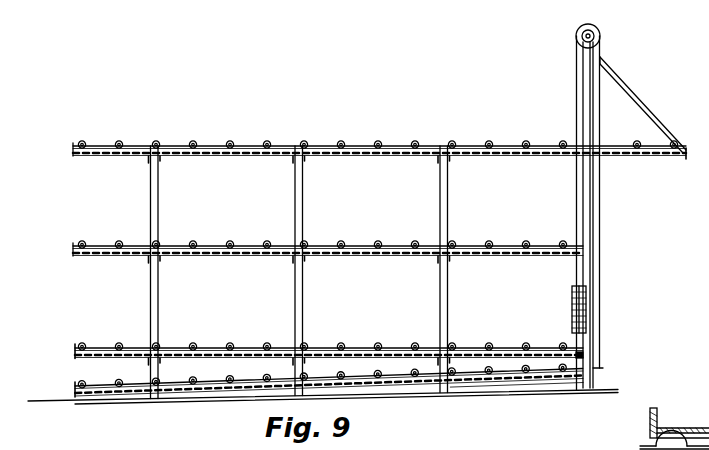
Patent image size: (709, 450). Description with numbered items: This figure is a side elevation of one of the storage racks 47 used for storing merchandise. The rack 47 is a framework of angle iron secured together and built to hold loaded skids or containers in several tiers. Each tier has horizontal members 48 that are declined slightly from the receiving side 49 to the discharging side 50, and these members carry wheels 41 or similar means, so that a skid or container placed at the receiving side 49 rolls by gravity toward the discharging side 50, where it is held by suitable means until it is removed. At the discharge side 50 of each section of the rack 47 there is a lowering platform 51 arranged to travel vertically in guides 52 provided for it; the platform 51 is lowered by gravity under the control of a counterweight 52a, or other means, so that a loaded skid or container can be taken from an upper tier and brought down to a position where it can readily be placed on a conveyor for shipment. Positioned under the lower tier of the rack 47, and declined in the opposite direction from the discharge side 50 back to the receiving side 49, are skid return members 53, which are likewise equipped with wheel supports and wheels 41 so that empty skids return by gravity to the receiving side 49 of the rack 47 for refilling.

The wheels 41 is at (262, 345).
The storage rack 47 is at (155, 283).
The horizontal members 48 is at (272, 253).
The receiving side 49 is at (88, 331).
The discharging side 50 is at (578, 351).
The lowering platform 51 is at (672, 160).
The guides 52 is at (597, 226).
The counterweight 52a is at (572, 294).
The skid return members 53 is at (88, 371).